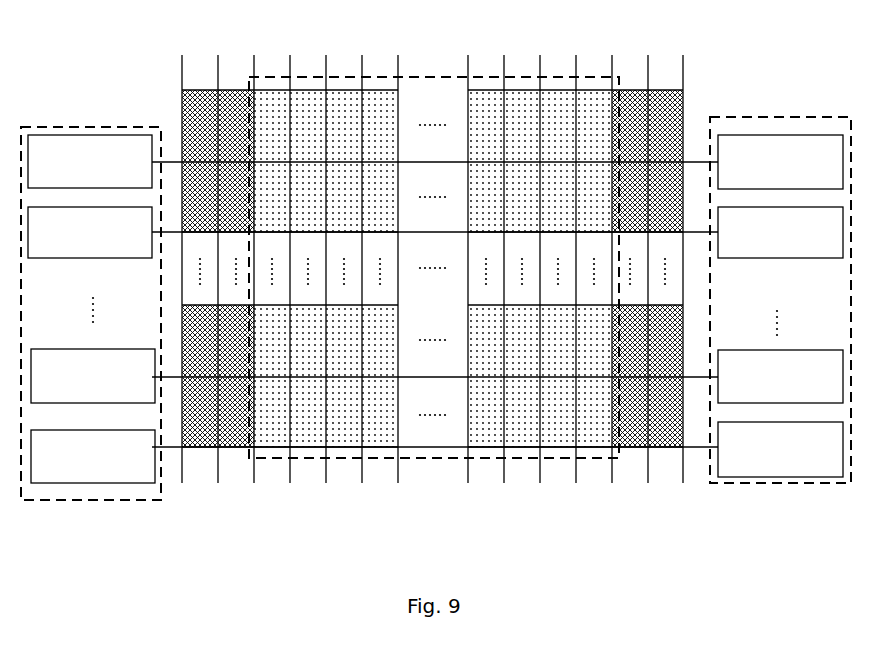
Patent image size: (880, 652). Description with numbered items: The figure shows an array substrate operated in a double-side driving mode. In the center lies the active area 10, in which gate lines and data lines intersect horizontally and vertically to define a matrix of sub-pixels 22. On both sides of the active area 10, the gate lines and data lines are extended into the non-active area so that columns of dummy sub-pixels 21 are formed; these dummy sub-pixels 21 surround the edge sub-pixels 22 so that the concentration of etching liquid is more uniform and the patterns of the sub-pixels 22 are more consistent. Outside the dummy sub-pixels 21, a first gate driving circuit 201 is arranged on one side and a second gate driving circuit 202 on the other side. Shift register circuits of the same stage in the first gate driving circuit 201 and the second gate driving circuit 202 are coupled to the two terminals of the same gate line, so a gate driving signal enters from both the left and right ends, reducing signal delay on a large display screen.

The active area 10 is at (590, 85).
The dummy sub-pixels 21 is at (207, 90).
The sub-pixels 22 is at (273, 107).
The first gate driving circuit 201 is at (97, 132).
The second gate driving circuit 202 is at (781, 128).